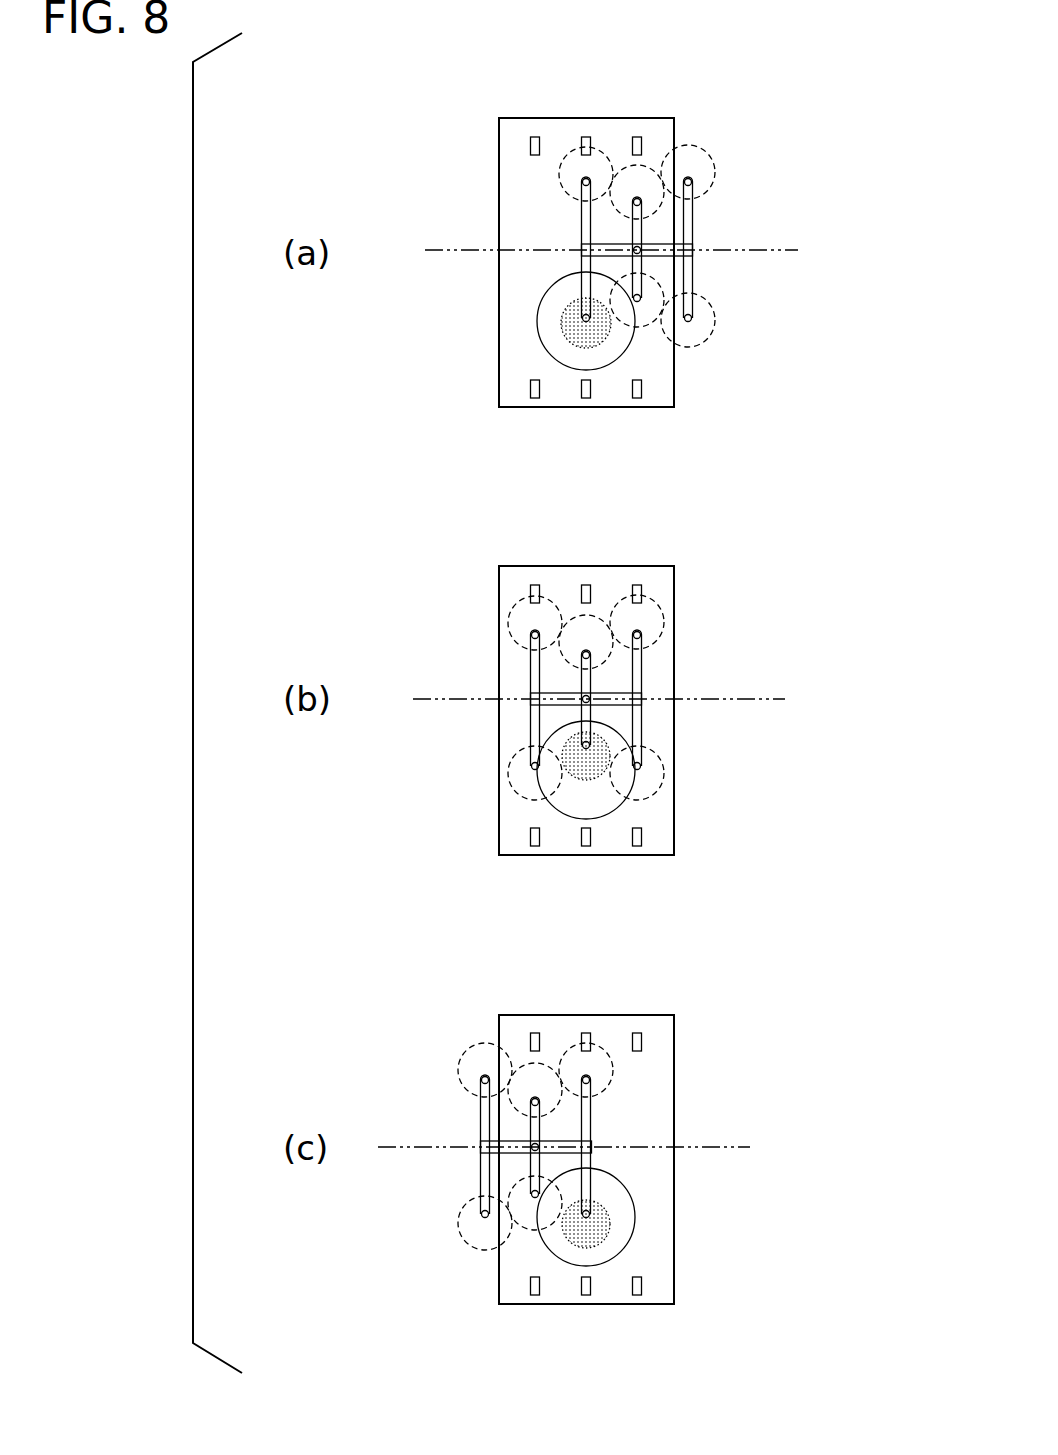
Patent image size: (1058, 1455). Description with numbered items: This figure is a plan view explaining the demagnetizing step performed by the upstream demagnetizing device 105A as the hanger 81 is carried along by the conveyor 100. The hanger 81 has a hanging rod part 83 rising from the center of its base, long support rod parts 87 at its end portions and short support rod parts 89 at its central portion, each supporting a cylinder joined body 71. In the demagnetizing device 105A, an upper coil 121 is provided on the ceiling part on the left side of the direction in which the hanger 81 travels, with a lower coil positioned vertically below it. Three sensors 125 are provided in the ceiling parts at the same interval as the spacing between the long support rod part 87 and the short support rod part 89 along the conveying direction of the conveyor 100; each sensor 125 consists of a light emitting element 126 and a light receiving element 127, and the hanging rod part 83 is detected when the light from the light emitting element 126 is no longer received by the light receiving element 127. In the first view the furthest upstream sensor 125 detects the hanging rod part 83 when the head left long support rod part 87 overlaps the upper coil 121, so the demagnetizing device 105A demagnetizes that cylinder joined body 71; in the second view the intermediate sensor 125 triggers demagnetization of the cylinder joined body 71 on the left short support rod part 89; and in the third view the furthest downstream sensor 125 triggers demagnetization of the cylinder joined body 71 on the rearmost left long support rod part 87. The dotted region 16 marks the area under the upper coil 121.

The demagnetizing device 105A is at (636, 100).
The light emitting element 126 is at (638, 136).
The light receiving element 127 is at (637, 398).
The sensor 125 is at (530, 412).
The conveyor 100 is at (763, 250).
The hanger 81 is at (578, 218).
The hanging rod part 83 is at (640, 249).
The long support rod part 87 is at (586, 321).
The short support rod part 89 is at (639, 300).
The upper coil 121 is at (538, 336).
The hatched region 16 is at (563, 290).
The cylinder joined body 71 is at (556, 307).